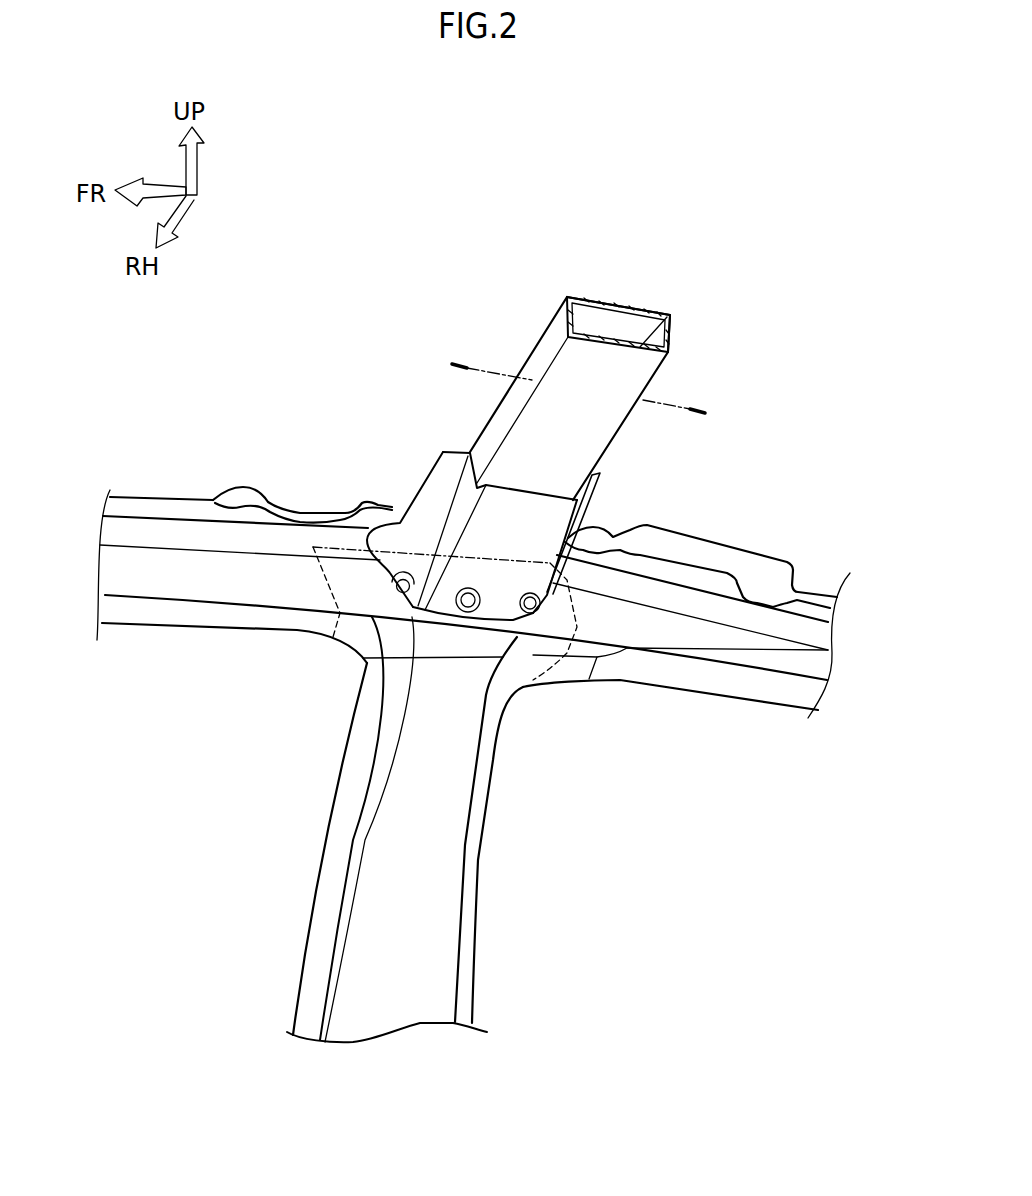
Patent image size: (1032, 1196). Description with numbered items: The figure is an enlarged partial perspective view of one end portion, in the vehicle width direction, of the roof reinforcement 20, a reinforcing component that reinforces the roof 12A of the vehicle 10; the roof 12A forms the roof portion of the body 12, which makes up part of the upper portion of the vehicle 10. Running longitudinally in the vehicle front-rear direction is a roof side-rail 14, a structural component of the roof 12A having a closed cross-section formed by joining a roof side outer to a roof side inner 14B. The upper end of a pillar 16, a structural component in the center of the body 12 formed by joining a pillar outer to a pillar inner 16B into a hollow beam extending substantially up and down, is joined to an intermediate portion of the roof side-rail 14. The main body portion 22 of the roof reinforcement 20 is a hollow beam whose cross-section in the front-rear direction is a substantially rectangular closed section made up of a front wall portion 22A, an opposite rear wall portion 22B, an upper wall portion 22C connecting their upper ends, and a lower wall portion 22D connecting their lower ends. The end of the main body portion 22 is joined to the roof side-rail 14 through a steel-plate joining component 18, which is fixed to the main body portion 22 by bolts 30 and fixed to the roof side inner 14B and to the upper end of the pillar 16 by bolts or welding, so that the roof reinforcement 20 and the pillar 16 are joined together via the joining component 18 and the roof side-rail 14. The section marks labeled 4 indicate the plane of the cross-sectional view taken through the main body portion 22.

The vehicle 10 is at (828, 388).
The body 12 is at (779, 538).
The roof 12A is at (717, 542).
The roof side-rail 14 is at (160, 494).
The roof side inner 14B is at (277, 580).
The pillar 16 is at (490, 814).
The pillar inner 16B is at (428, 915).
The joining component 18 is at (420, 495).
The roof reinforcement 20 is at (629, 361).
The main body portion 22 is at (663, 306).
The front wall portion 22A is at (539, 357).
The rear wall portion 22B is at (672, 335).
The upper wall portion 22C is at (600, 302).
The lower wall portion 22D is at (637, 375).
The bolts 30 is at (530, 612).
The section line of FIG. 4 is at (455, 374).